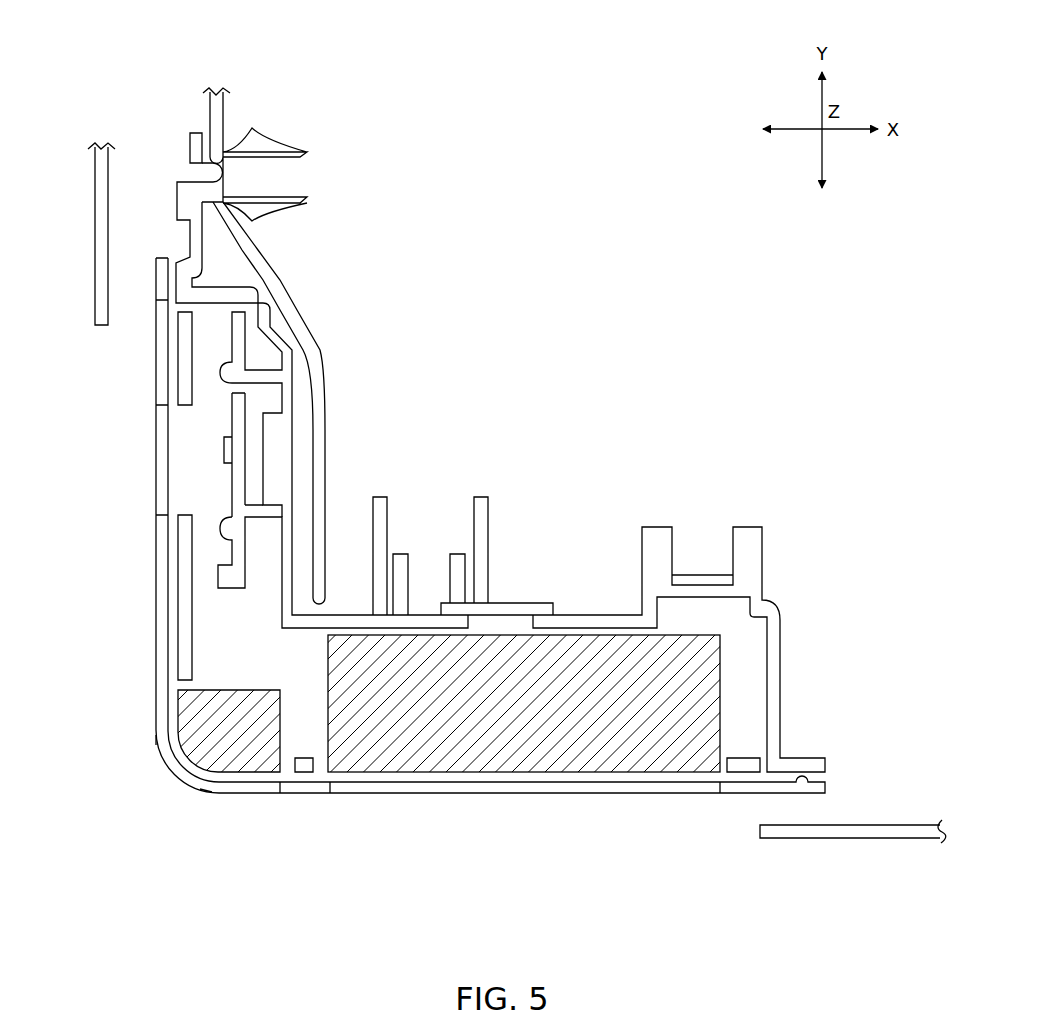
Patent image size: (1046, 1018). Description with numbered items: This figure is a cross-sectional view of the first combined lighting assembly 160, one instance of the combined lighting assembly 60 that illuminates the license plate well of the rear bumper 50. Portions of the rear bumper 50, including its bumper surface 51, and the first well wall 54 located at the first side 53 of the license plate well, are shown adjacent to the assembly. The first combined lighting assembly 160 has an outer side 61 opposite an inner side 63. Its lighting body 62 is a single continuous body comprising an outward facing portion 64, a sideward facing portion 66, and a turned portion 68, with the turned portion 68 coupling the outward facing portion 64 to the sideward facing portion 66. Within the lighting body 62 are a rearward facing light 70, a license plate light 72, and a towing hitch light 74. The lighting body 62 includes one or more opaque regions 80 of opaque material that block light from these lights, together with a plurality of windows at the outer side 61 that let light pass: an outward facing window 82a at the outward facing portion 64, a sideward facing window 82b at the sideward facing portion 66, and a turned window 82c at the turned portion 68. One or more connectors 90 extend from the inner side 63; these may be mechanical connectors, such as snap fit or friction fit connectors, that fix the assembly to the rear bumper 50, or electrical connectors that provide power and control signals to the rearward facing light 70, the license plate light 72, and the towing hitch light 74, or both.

The rear bumper 50 is at (886, 820).
The bumper surface 51 is at (847, 838).
The first side 53 is at (101, 114).
The first well wall 54 is at (95, 197).
The combined lighting assembly 60 is at (206, 838).
The first combined lighting assembly 160 is at (135, 946).
The outer side 61 is at (399, 838).
The lighting body 62 is at (597, 799).
The inner side 63 is at (439, 401).
The outward facing portion 64 is at (690, 795).
The sideward facing portion 66 is at (156, 596).
The turned portion 68 is at (162, 765).
The rearward facing light 70 is at (705, 715).
The license plate light 72 is at (225, 450).
The towing hitch light 74 is at (236, 753).
The opaque region 80 is at (162, 558).
The outward facing window 82a is at (460, 795).
The sideward facing window 82b is at (156, 468).
The turned window 82c is at (197, 793).
The connector 90 is at (275, 150).